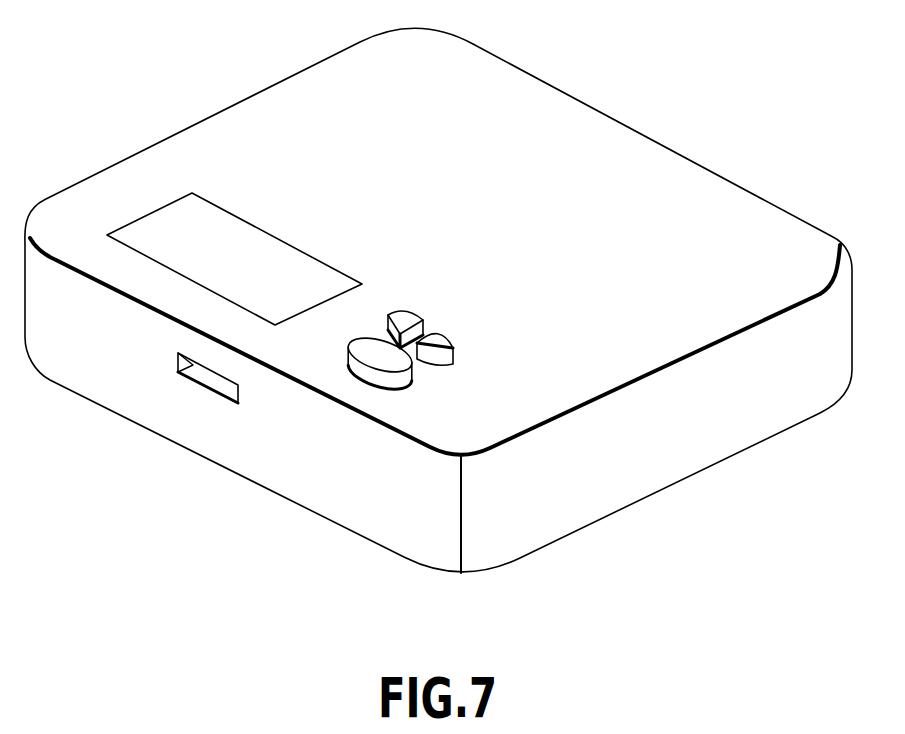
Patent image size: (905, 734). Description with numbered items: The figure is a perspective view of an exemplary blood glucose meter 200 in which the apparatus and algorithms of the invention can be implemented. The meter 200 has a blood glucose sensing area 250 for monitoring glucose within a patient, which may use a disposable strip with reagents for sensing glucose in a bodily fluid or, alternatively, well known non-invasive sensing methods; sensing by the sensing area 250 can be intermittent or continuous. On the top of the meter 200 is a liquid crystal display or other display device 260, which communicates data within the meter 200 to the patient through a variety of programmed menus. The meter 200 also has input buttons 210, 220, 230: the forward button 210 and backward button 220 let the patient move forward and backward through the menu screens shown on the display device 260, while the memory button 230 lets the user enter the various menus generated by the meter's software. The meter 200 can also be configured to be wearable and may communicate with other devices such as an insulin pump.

The blood glucose meter 200 is at (125, 100).
The forward button 210 is at (445, 355).
The backward button 220 is at (398, 322).
The memory button 230 is at (382, 352).
The blood glucose sensing area 250 is at (202, 372).
The display device 260 is at (172, 248).